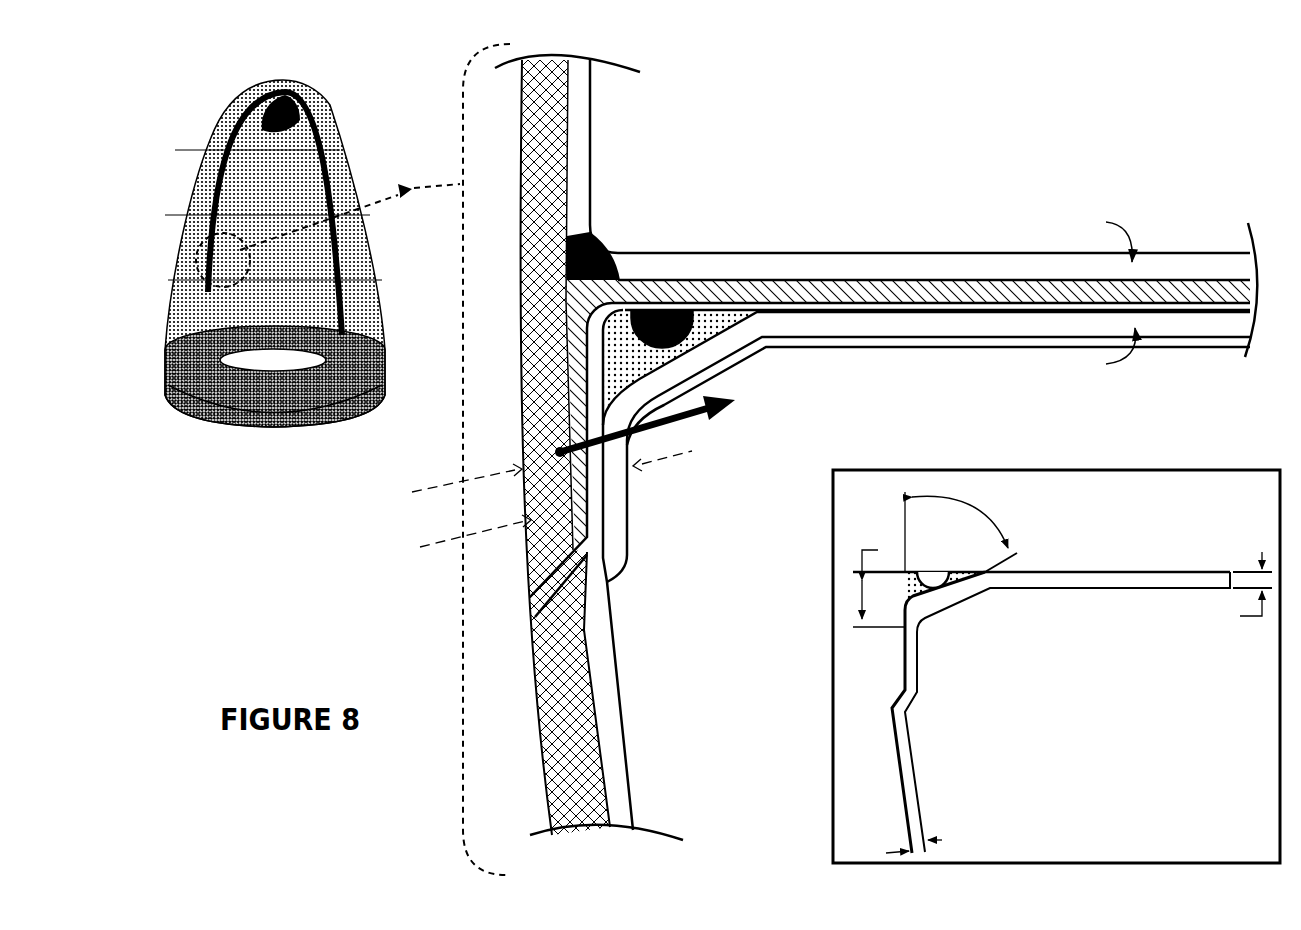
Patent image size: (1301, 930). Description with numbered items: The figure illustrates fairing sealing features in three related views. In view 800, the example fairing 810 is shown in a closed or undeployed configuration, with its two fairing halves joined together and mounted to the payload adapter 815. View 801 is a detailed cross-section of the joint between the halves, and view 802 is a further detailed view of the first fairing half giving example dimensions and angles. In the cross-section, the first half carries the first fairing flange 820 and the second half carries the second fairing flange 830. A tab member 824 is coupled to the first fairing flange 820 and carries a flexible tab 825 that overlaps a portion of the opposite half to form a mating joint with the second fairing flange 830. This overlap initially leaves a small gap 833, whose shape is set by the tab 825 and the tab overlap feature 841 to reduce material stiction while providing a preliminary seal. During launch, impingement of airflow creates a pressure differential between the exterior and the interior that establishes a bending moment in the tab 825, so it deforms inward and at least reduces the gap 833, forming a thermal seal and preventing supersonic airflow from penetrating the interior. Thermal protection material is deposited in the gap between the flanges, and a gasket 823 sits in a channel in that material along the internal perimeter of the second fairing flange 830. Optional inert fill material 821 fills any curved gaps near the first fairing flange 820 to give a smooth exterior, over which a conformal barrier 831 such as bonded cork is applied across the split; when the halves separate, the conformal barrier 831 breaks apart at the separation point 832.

The view 800 is at (302, 269).
The view 801 is at (778, 447).
The view 802 is at (1056, 666).
The fairing 810 is at (337, 97).
The payload adapter 815 is at (238, 427).
The first fairing flange 820 is at (934, 270).
The fill material 821 is at (574, 268).
The gasket 823 is at (744, 292).
The tab member 824 is at (751, 290).
The tab 825 is at (590, 474).
The second fairing flange 830 is at (926, 447).
The conformal barrier 831 is at (546, 707).
The separation point 832 is at (530, 610).
The gap 833 is at (592, 555).
The tab overlap feature 841 is at (894, 676).